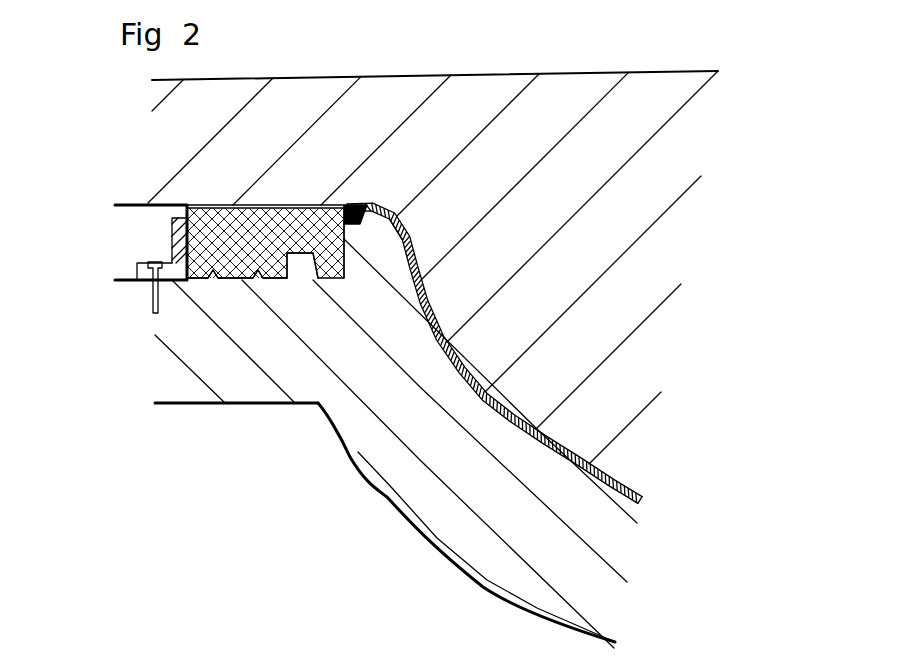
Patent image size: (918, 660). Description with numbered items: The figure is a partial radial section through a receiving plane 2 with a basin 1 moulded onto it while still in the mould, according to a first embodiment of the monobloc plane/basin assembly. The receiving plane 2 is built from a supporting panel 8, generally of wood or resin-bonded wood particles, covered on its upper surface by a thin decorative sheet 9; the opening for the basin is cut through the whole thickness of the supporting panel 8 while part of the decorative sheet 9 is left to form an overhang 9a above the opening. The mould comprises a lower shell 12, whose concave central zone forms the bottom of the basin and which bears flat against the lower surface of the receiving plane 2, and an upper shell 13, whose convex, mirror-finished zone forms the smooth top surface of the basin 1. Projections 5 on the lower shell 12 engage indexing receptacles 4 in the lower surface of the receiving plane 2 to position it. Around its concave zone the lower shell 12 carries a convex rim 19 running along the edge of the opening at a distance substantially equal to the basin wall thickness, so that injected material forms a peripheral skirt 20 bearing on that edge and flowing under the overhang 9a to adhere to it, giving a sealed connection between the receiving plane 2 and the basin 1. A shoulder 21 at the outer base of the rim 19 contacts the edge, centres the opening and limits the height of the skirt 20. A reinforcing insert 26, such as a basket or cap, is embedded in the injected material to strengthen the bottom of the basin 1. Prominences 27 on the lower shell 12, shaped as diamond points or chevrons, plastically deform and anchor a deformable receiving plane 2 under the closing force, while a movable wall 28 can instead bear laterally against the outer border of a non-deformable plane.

The basin 1 is at (553, 463).
The receiving plane 2 is at (278, 218).
The indexing receptacles 4 is at (303, 256).
The projections 5 is at (293, 272).
The supporting panel 8 is at (217, 240).
The decorative sheet 9 is at (250, 206).
The overhang 9a is at (350, 203).
The lower shell 12 is at (358, 452).
The upper shell 13 is at (638, 113).
The convex rim 19 is at (390, 240).
The peripheral skirt 20 is at (350, 222).
The shoulder 21 is at (347, 222).
The reinforcing insert 26 is at (553, 463).
The prominences 27 is at (237, 280).
The movable wall 28 is at (178, 252).